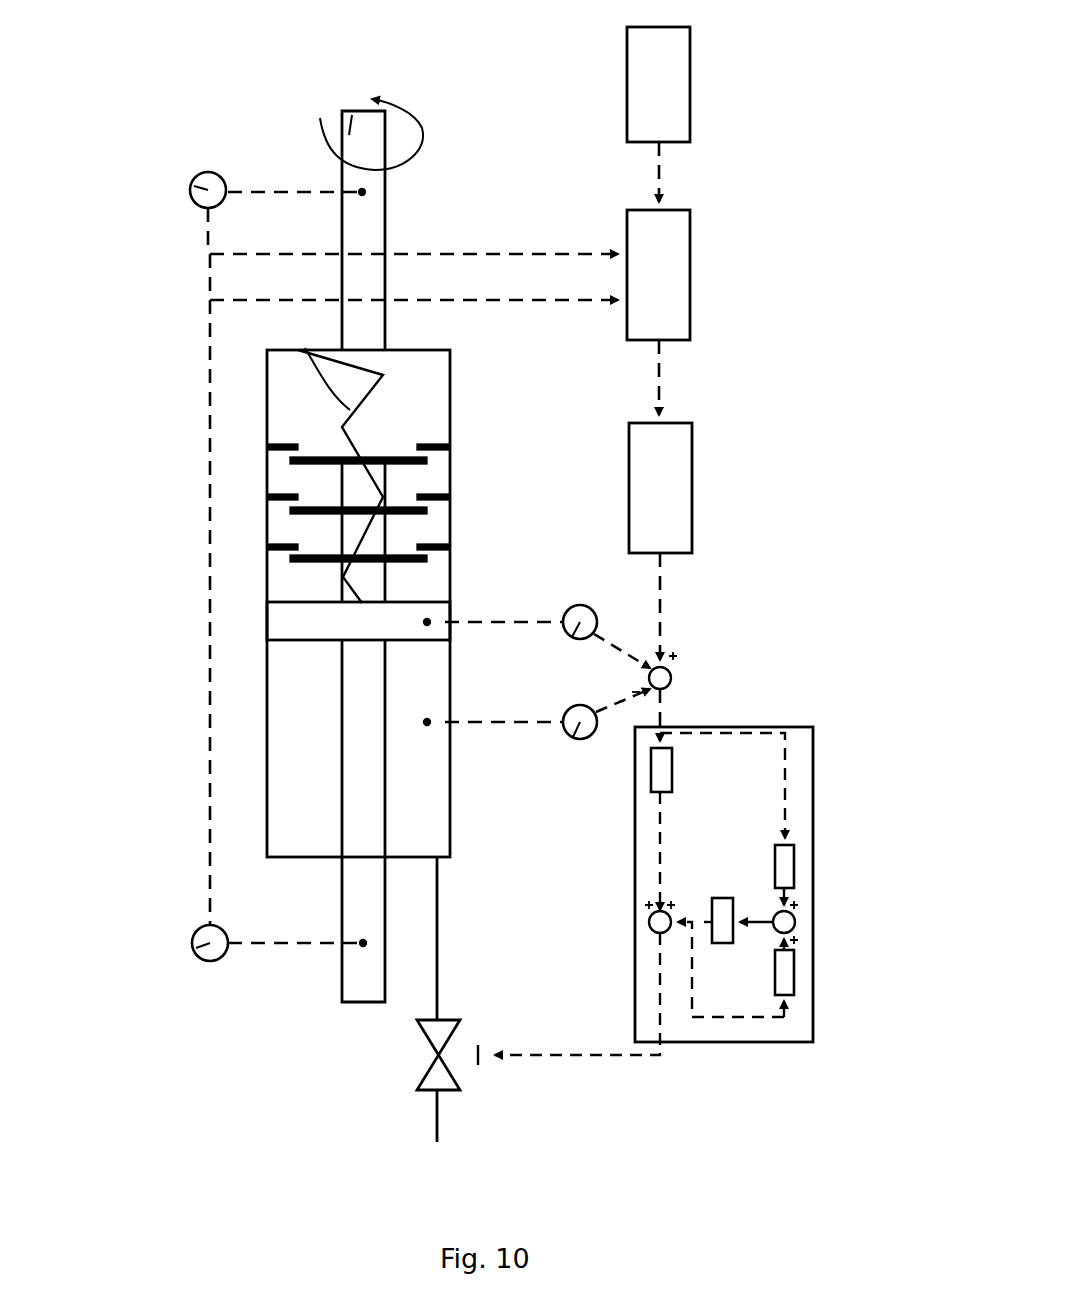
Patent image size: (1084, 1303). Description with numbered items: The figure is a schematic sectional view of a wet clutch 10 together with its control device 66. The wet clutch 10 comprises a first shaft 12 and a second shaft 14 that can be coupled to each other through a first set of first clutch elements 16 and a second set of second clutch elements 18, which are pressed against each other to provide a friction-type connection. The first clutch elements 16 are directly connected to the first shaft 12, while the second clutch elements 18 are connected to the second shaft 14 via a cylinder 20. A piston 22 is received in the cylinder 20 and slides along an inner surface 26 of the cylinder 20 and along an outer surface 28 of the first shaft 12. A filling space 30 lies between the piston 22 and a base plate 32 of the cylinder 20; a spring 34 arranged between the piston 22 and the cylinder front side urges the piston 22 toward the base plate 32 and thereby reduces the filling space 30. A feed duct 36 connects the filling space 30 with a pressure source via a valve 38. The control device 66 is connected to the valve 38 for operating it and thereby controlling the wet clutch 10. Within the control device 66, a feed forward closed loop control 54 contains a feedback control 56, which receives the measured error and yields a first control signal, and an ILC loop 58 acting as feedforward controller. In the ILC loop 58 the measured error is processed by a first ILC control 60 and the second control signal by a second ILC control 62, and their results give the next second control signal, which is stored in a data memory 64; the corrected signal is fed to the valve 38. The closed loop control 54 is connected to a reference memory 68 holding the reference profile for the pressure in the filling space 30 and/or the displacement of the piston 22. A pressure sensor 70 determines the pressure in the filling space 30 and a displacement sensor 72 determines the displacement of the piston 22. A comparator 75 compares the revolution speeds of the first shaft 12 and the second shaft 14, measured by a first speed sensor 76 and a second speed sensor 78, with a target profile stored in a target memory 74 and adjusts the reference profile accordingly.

The wet clutch 10 is at (226, 78).
The first shaft 12 is at (308, 978).
The second shaft 14 is at (353, 108).
The first clutch elements 16 is at (310, 455).
The second clutch elements 18 is at (275, 445).
The cylinder 20 is at (267, 808).
The piston 22 is at (285, 620).
The inner surface 26 is at (278, 707).
The outer surface 28 is at (340, 770).
The filling space 30 is at (320, 743).
The base plate 32 is at (322, 853).
The spring 34 is at (298, 350).
The feed duct 36 is at (362, 958).
The valve 38 is at (448, 1080).
The feed forward closed loop control 54 is at (645, 990).
The feedback control 56 is at (665, 765).
The ILC loop 58 is at (812, 993).
The first ILC control 60 is at (786, 868).
The second ILC control 62 is at (790, 978).
The data memory 64 is at (720, 910).
The control device 66 is at (828, 1065).
The reference memory 68 is at (672, 460).
The pressure sensor 70 is at (590, 700).
The displacement sensor 72 is at (590, 610).
The target memory 74 is at (672, 55).
The comparator 75 is at (672, 240).
The first speed sensor 76 is at (196, 950).
The second speed sensor 78 is at (196, 188).